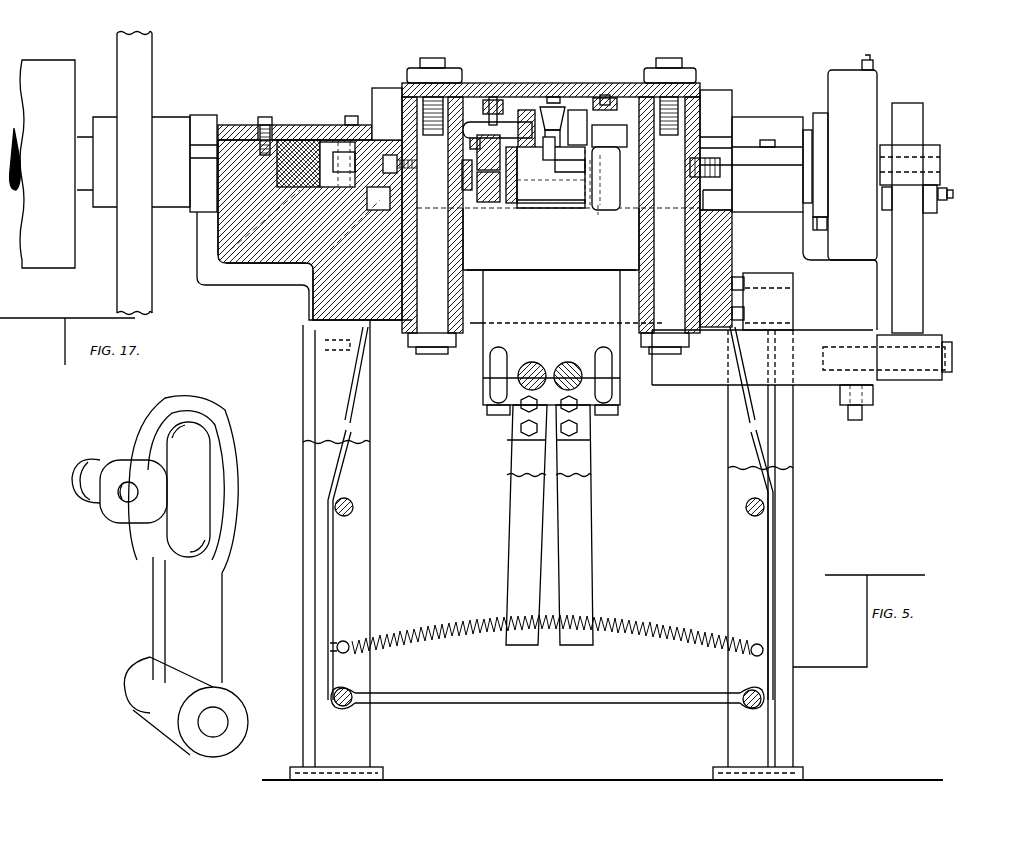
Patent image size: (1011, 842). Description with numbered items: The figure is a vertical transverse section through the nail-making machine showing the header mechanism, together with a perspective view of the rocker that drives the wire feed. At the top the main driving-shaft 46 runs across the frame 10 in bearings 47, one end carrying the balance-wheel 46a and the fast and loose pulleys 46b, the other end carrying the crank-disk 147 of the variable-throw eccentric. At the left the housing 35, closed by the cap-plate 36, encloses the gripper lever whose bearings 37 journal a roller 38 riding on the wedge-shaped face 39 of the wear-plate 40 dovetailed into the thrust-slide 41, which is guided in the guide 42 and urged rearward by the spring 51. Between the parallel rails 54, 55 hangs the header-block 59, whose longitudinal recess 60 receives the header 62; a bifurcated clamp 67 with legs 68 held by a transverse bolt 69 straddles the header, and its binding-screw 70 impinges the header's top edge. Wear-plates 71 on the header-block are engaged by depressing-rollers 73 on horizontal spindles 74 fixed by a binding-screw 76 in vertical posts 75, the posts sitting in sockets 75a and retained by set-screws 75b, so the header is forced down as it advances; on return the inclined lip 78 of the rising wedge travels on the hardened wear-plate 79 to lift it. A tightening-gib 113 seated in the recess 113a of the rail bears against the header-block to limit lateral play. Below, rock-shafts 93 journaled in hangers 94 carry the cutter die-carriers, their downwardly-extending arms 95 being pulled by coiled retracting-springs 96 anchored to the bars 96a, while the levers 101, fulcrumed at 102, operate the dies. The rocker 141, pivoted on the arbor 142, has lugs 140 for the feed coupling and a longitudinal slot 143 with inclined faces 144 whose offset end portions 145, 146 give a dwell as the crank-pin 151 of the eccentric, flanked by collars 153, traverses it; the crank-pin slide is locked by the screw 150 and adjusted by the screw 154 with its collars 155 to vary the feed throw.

In FIG. 5, the frame 10 is at (300, 288).
In FIG. 5, the housing 35 is at (290, 268).
In FIG. 5, the cap-plate 36 is at (300, 140).
In FIG. 5, the bearings 37 is at (350, 115).
In FIG. 5, the roller 38 is at (265, 268).
In FIG. 5, the wedge-shaped face 39 is at (218, 238).
In FIG. 5, the wear-plate 40 is at (220, 183).
In FIG. 5, the thrust-slide 41 is at (265, 117).
In FIG. 5, the guide 42 is at (218, 157).
In FIG. 5, the main driving-shaft 46 is at (37, 164).
In FIG. 5, the balance-wheel 46a is at (123, 290).
In FIG. 5, the fast and loose pulleys 46b is at (38, 265).
In FIG. 5, the bearings 47 is at (211, 115).
In FIG. 5, the spring 51 is at (370, 112).
In FIG. 5, the rail 54 is at (500, 210).
In FIG. 5, the rail 55 is at (691, 169).
In FIG. 5, the header-block 59 is at (545, 205).
In FIG. 5, the longitudinal recess 60 is at (527, 205).
In FIG. 5, the header 62 is at (560, 205).
In FIG. 5, the bifurcated clamp 67 is at (562, 115).
In FIG. 5, the legs 68 is at (540, 205).
In FIG. 5, the transverse bolt 69 is at (583, 205).
In FIG. 5, the binding-screw 70 is at (552, 97).
In FIG. 5, the wear-plates 71 is at (478, 148).
In FIG. 5, the depressing-rollers 73 is at (526, 108).
In FIG. 5, the horizontal spindles 74 is at (478, 120).
In FIG. 5, the vertical posts 75 is at (462, 196).
In FIG. 5, the sockets 75a is at (590, 248).
In FIG. 5, the set-screws 75b is at (637, 212).
In FIG. 5, the binding-screw 76 is at (494, 97).
In FIG. 5, the inclined lip 78 is at (505, 205).
In FIG. 5, the hardened wear-plate 79 is at (528, 210).
In FIG. 5, the rock-shafts 93 is at (520, 382).
In FIG. 5, the hangers 94 is at (490, 340).
In FIG. 5, the downwardly-extending arms 95 is at (510, 540).
In FIG. 5, the coiled retracting-springs 96 is at (462, 648).
In FIG. 5, the bars 96a is at (332, 575).
In FIG. 5, the levers 101 is at (705, 198).
In FIG. 5, the fulcrum 102 is at (733, 243).
In FIG. 5, the tightening-gib 113 is at (450, 230).
In FIG. 5, the recess 113a is at (455, 226).
In FIG. 5, the lugs 140 is at (895, 145).
In FIG. 17, the lugs 140 is at (78, 480).
In FIG. 5, the rocker 141 is at (925, 298).
In FIG. 17, the rocker 141 is at (160, 628).
In FIG. 5, the arbor 142 is at (952, 360).
In FIG. 17, the longitudinal slot 143 is at (200, 494).
In FIG. 17, the inclined faces 144 is at (212, 470).
In FIG. 17, the end portion 145 is at (190, 430).
In FIG. 17, the end portion 146 is at (200, 545).
In FIG. 5, the crank-disk 147 is at (850, 260).
In FIG. 5, the screw 150 is at (818, 232).
In FIG. 5, the crank-pin 151 is at (953, 193).
In FIG. 5, the collars 153 is at (885, 210).
In FIG. 5, the screw 154 is at (875, 58).
In FIG. 5, the collars 155 is at (940, 210).